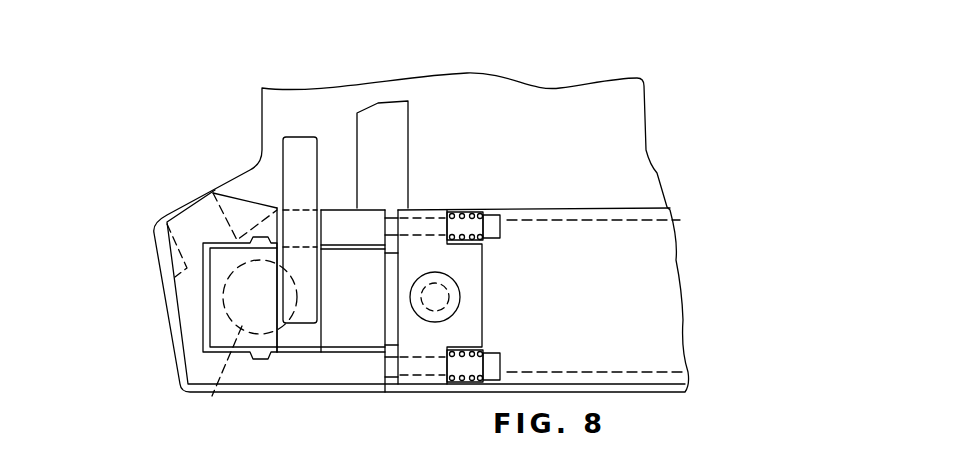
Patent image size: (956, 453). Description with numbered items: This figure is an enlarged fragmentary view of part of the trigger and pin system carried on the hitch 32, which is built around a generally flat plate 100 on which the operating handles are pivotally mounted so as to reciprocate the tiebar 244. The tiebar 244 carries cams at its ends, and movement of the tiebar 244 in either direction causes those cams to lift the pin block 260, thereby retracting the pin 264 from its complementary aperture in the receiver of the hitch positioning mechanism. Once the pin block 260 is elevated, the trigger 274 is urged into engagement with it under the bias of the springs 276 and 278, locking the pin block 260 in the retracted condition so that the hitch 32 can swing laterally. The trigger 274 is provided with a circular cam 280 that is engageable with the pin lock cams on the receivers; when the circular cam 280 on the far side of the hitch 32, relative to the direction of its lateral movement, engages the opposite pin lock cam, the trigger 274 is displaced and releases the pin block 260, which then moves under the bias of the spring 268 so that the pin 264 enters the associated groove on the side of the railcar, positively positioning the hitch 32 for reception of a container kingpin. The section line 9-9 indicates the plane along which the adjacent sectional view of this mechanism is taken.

The flat plate 100 is at (287, 112).
The hitch 32 is at (128, 218).
The spring 268 is at (300, 137).
The tiebar 244 is at (409, 107).
The spring 276 is at (458, 208).
The spring 278 is at (482, 353).
The trigger 274 is at (486, 286).
The circular cam 280 is at (452, 281).
The pin block 260 is at (212, 327).
The pin 264 is at (211, 380).
The section line 9- 9 is at (191, 297).